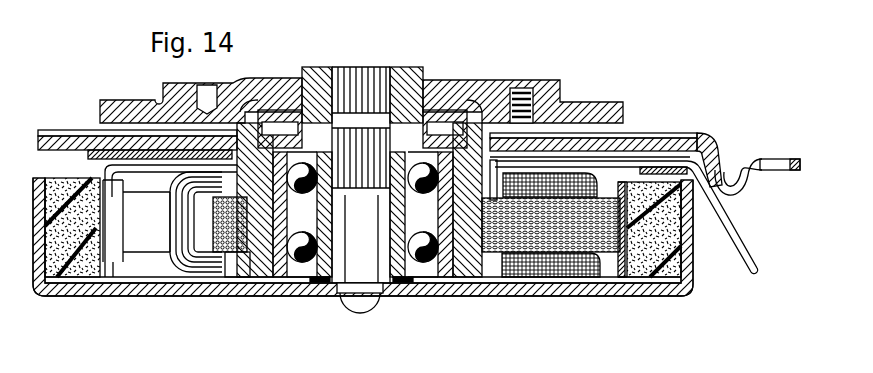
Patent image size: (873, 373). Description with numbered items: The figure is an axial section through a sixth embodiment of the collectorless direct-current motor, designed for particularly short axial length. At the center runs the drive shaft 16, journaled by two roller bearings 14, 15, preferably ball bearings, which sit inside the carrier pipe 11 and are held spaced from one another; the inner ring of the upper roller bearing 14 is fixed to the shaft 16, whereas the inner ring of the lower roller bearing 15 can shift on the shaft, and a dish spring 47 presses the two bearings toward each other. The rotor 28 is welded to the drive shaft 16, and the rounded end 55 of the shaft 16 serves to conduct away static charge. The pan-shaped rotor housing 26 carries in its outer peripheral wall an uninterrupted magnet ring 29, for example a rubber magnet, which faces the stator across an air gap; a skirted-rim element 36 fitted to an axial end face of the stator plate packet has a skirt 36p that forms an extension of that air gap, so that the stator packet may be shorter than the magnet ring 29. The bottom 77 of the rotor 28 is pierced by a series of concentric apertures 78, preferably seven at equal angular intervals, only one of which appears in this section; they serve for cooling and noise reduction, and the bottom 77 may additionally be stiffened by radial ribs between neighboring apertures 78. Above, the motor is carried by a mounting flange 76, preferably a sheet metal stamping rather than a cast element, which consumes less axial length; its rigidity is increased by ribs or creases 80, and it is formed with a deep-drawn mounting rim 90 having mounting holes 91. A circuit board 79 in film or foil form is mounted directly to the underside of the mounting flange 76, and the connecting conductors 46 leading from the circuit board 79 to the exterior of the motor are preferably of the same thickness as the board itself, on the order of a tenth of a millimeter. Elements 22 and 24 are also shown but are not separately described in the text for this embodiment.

The carrier pipe 11 is at (465, 262).
The roller bearing 14 is at (272, 205).
The roller bearing 15 is at (447, 270).
The drive shaft 16 is at (346, 222).
The rotor hub plate 22 is at (590, 105).
The bearing retainer ring 24 is at (447, 113).
The rotor housing 26 is at (72, 227).
The rotor 28 is at (683, 232).
The magnet ring 29 is at (682, 262).
The skirted-rim element 36 is at (582, 278).
The skirt 36p is at (608, 273).
The connecting conductors 46 is at (735, 225).
The dish spring 47 is at (310, 280).
The rounded end 55 is at (365, 303).
The mounting flange 76 is at (673, 140).
The bottom 77 is at (105, 292).
The apertures 78 is at (627, 290).
The circuit board 79 is at (90, 148).
The ribs or creases 80 is at (642, 137).
The mounting rim 90 is at (752, 158).
The mounting holes 91 is at (780, 158).